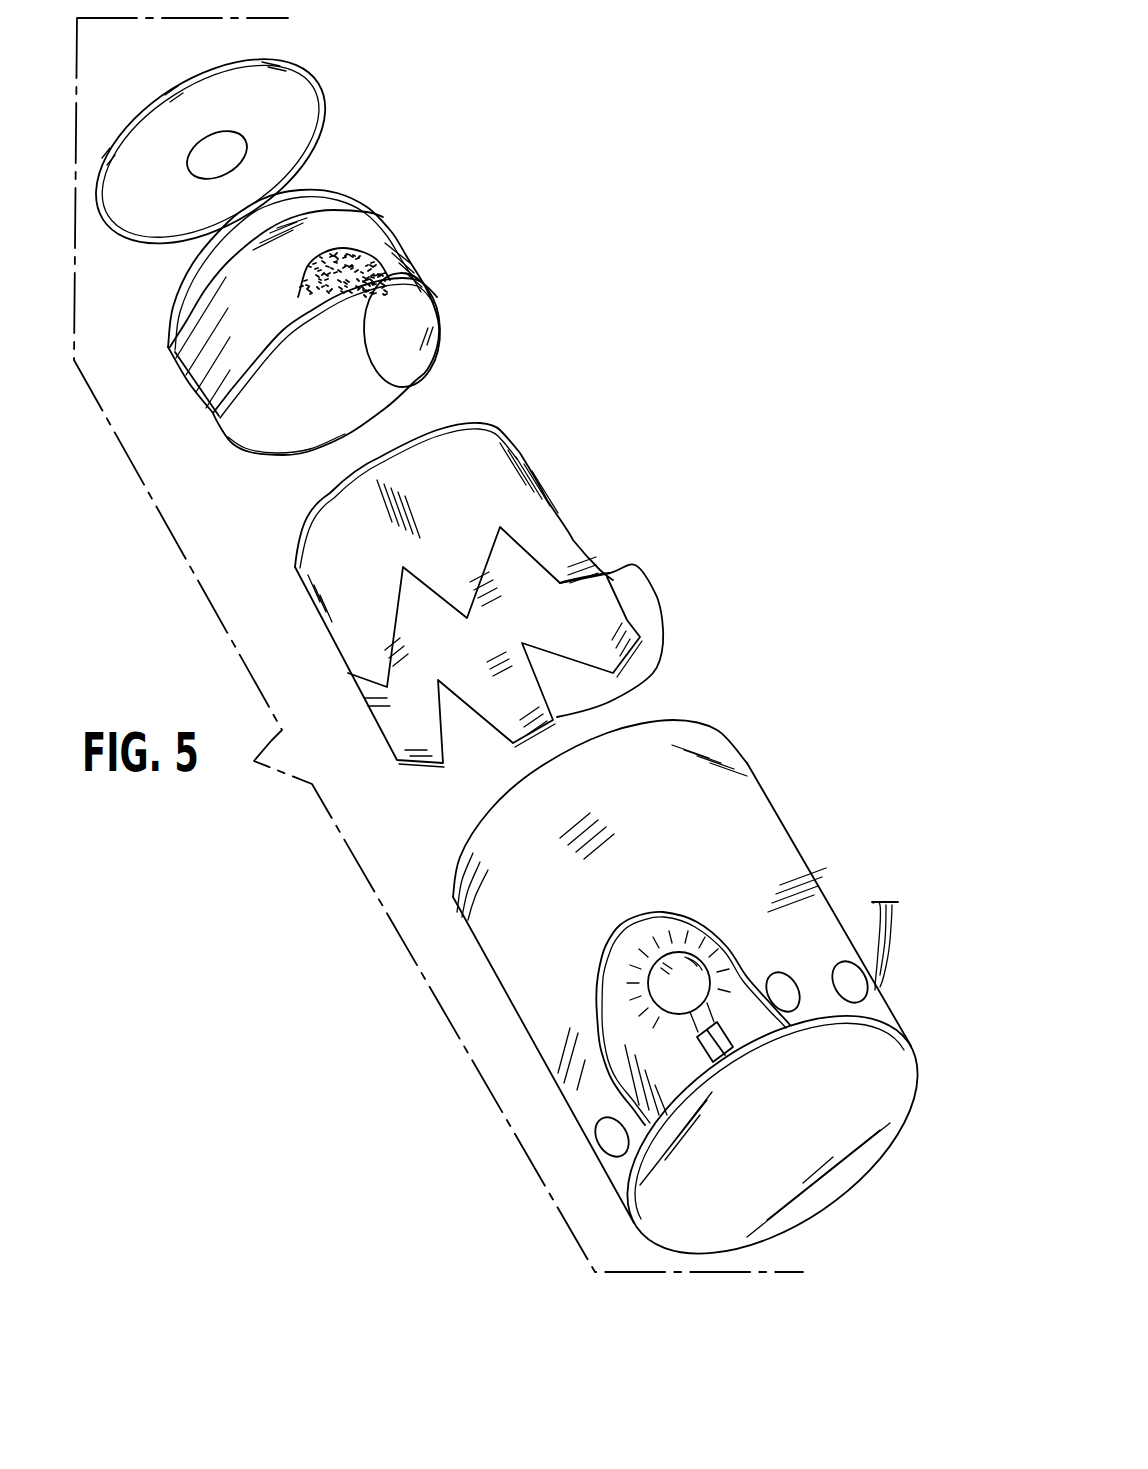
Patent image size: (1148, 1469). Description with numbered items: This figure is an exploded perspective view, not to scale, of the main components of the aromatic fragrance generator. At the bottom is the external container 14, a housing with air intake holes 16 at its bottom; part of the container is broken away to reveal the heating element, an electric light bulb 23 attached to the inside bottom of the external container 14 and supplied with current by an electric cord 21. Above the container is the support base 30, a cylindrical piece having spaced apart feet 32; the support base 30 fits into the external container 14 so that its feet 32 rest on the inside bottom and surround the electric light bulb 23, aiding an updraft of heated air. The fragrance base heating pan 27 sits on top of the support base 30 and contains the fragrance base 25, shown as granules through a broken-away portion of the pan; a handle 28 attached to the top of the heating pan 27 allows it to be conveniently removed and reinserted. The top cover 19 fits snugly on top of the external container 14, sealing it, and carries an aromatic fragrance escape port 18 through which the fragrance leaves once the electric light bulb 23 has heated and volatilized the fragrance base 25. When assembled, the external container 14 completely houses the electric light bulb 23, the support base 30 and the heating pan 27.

The external container 14 is at (733, 810).
The air intake holes 16 is at (790, 1005).
The aromatic fragrance escape port 18 is at (232, 150).
The cover 19 is at (293, 132).
The electric cord 21 is at (880, 927).
The electric light bulb 23 is at (670, 973).
The fragrance base 25 is at (413, 382).
The fragrance base heating pan 27 is at (410, 254).
The handle 28 is at (387, 241).
The support base 30 is at (493, 500).
The feet 32 is at (627, 620).